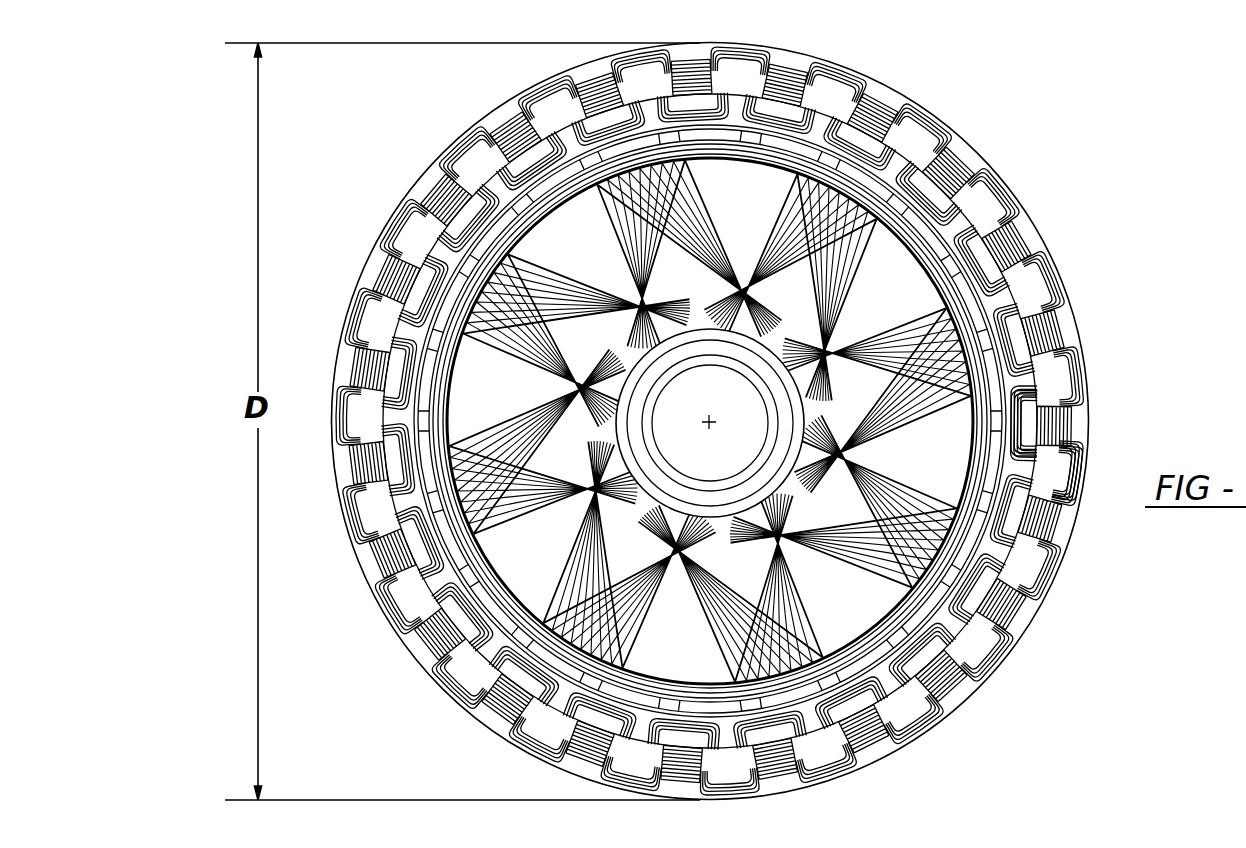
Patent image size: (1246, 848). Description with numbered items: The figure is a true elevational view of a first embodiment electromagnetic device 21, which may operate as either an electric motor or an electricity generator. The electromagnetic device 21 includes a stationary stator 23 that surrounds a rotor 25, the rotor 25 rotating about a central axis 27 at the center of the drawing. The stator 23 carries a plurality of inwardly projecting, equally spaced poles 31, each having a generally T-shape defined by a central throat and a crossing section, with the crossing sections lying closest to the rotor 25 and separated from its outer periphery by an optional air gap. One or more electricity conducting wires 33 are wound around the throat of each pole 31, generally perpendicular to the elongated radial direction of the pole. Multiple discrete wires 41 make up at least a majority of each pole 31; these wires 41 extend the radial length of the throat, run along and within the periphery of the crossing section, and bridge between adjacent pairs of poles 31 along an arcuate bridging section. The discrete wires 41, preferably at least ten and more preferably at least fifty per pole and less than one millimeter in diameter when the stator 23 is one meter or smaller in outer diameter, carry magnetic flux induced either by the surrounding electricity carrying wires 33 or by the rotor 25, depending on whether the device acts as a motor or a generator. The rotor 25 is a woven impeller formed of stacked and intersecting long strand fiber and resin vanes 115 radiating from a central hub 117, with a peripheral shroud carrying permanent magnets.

The electromagnetic device 21 is at (767, 422).
The stator 23 is at (885, 83).
The rotor 25 is at (930, 240).
The central axis 27 is at (706, 420).
The pole 31 is at (993, 297).
The electricity conducting wire 33 is at (892, 128).
The discrete wire 41 is at (1000, 190).
The vane 115 is at (793, 610).
The central hub 117 is at (698, 498).